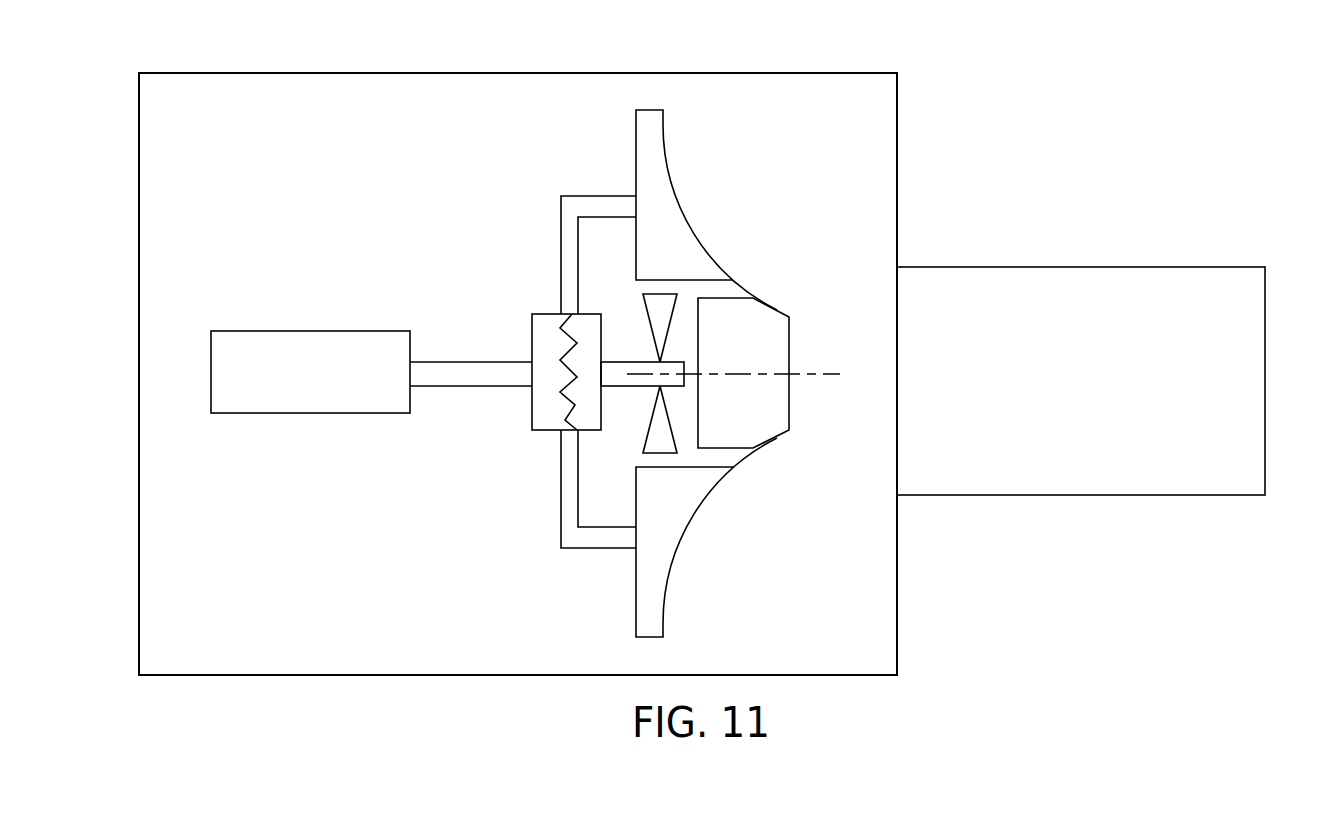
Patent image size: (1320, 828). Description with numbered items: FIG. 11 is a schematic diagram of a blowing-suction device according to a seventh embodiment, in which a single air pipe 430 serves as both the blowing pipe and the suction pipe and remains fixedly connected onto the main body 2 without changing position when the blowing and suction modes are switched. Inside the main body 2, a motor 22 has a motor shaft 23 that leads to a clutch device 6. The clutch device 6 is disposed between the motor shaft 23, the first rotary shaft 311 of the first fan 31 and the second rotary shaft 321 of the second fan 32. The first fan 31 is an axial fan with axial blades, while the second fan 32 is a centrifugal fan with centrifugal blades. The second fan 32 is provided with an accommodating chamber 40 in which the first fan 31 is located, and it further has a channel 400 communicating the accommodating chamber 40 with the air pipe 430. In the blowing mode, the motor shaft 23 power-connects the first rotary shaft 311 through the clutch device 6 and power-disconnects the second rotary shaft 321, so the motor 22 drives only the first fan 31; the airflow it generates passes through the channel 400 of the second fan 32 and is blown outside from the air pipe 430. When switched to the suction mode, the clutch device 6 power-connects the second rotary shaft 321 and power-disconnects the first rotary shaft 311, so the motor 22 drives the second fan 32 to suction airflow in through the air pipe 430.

The main body 2 is at (394, 113).
The motor 22 is at (294, 365).
The motor shaft 23 is at (447, 370).
The clutch device 6 is at (547, 405).
The second rotary shaft 321 is at (571, 237).
The first rotary shaft 311 is at (620, 378).
The second fan 32 is at (678, 223).
The first fan 31 is at (662, 440).
The accommodating chamber 40 is at (720, 376).
The channel 400 is at (727, 453).
The air pipe 430 is at (1172, 373).